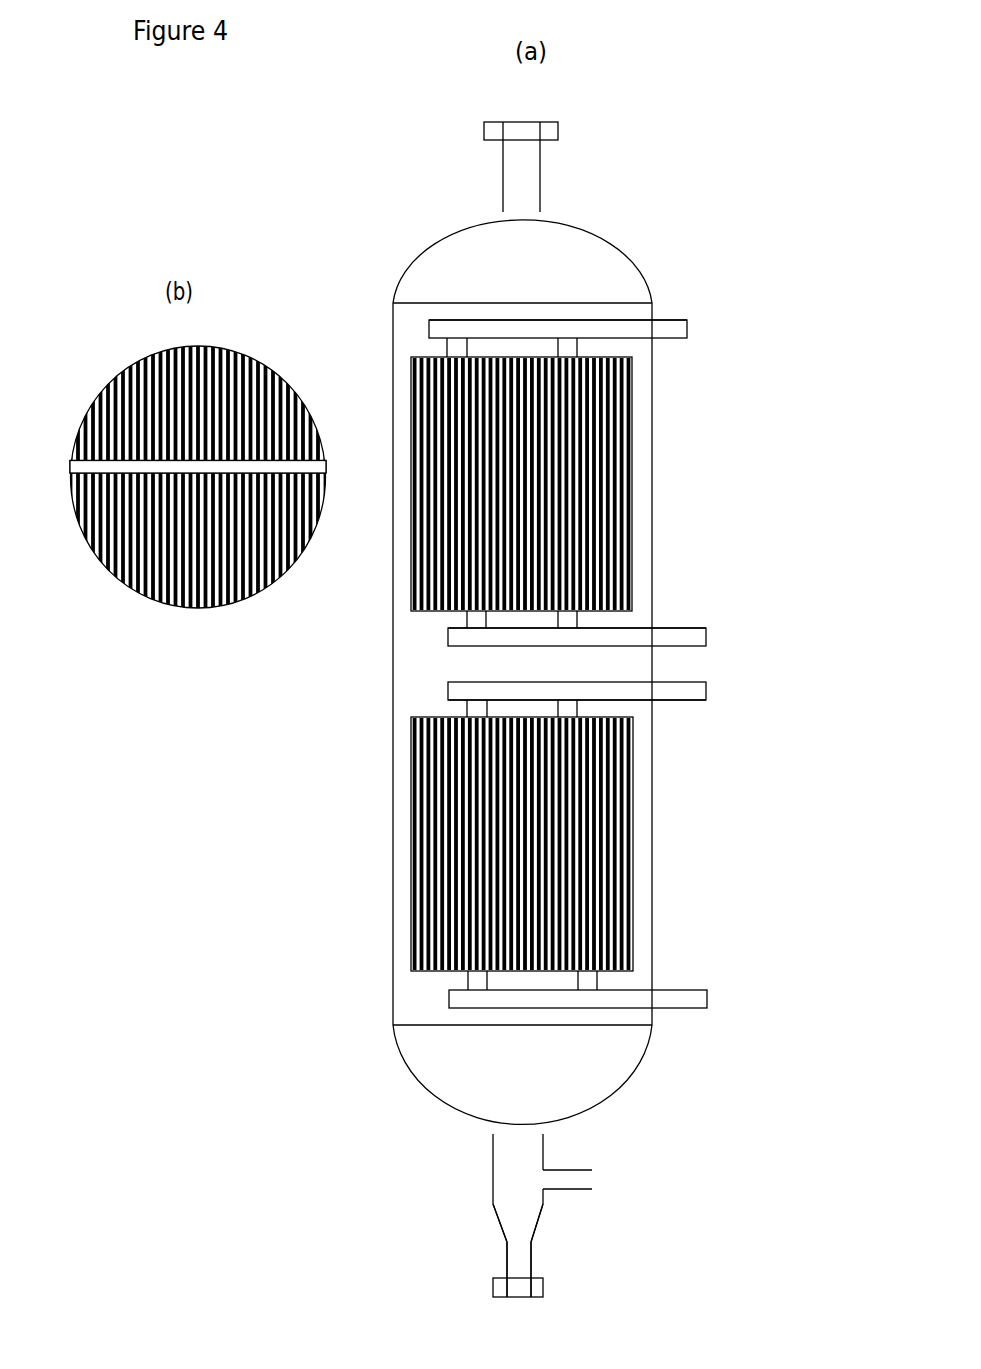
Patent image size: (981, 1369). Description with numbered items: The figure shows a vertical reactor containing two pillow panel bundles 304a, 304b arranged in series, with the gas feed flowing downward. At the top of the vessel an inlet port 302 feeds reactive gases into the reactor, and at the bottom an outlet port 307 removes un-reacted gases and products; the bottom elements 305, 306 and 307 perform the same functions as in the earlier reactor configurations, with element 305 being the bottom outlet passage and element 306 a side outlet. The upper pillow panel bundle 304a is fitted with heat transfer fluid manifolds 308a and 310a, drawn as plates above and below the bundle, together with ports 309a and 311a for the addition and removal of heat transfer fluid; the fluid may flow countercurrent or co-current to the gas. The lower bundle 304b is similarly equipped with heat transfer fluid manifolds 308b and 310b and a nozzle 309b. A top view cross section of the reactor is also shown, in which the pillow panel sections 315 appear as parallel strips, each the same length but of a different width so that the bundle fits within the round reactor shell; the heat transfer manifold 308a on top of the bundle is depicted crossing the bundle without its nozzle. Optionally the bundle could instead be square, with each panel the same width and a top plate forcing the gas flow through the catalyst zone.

The inlet port 302 is at (562, 151).
The pillow panel bundle 304a is at (602, 450).
The pillow panel bundle 304b is at (582, 852).
The element 305 is at (473, 1187).
The element 306 is at (619, 1187).
The outlet port 307 is at (573, 1212).
The heat transfer fluid manifold 308a is at (553, 318).
The heat transfer fluid manifold 308b is at (572, 692).
The port 309a is at (697, 328).
The nozzle 309b is at (718, 698).
The heat transfer fluid manifold 310a is at (622, 627).
The heat transfer fluid manifold 310b is at (552, 997).
The port 311a is at (720, 637).
The pillow panel sections 315 is at (121, 552).